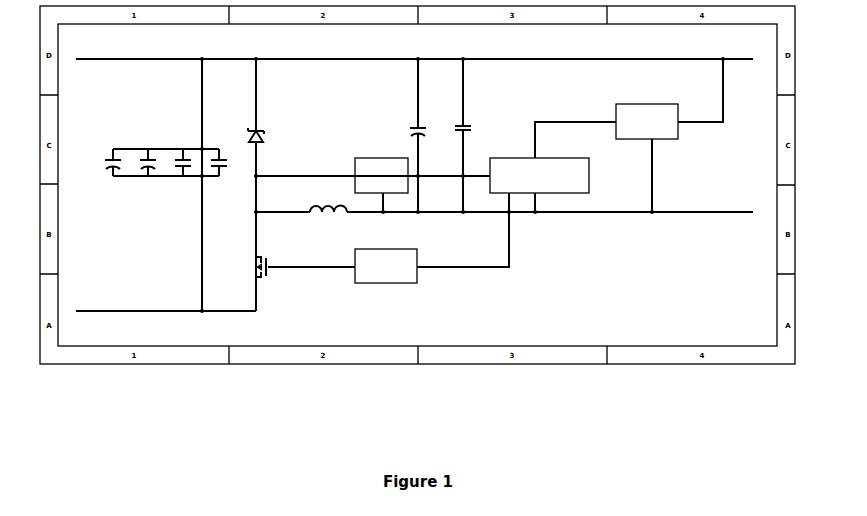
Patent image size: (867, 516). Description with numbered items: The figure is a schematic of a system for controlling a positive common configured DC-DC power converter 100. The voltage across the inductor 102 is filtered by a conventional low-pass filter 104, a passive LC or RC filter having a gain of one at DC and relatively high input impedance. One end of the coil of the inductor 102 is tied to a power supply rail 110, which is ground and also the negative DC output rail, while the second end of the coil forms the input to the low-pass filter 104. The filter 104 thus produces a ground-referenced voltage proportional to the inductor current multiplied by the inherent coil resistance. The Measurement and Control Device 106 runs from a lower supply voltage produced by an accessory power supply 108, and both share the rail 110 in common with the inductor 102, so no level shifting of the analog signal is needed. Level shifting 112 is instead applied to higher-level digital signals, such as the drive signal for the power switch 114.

The DC-DC power converter 100 is at (404, 406).
The inductor 102 is at (324, 217).
The low-pass filter 104 is at (373, 158).
The Measurement and Control Device 106 is at (568, 193).
The accessory power supply 108 is at (640, 103).
The power supply rail 110 is at (693, 212).
The level shifting 112 is at (388, 283).
The power switch 114 is at (263, 278).